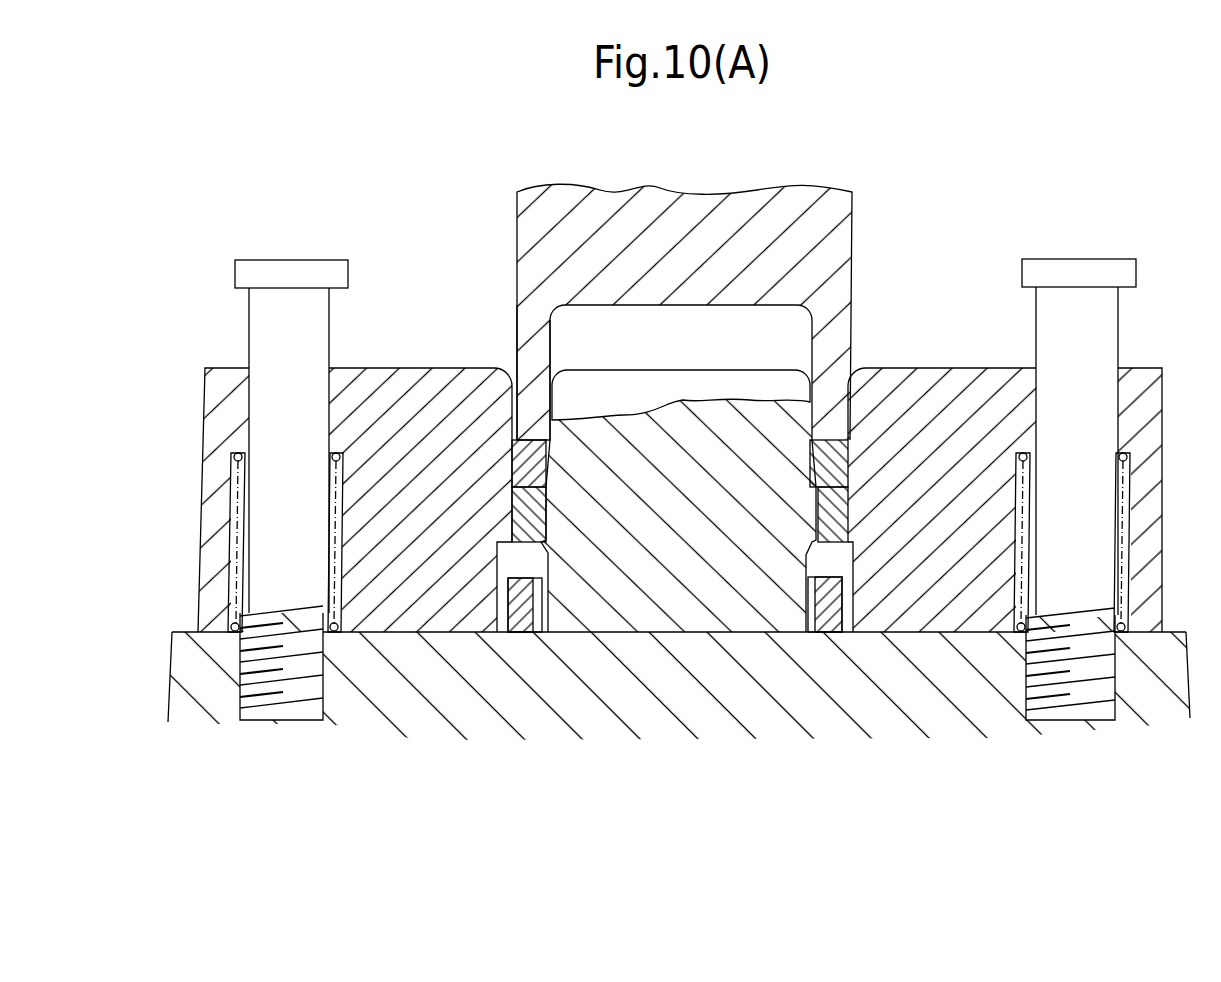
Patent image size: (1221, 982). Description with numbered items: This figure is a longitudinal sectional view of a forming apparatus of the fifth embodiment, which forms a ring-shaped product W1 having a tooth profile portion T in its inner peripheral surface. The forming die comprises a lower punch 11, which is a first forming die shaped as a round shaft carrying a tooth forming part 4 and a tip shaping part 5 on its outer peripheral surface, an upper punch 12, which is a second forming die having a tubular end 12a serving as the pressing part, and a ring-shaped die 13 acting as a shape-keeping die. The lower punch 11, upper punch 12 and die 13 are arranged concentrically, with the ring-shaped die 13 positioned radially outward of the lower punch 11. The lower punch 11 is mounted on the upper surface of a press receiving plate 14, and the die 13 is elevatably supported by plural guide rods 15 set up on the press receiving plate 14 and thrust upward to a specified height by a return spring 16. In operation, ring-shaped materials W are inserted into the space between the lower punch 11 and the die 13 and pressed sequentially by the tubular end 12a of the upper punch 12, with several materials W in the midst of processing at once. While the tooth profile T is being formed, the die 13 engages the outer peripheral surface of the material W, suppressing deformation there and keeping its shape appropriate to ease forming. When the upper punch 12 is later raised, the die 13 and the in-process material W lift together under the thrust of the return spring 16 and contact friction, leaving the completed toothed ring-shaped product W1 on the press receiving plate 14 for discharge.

The tooth forming part 4 is at (510, 508).
The tip shaping part 5 is at (545, 500).
The lower punch 11 is at (653, 390).
The upper punch 12 is at (713, 215).
The tubular end 12a is at (523, 355).
The ring-shaped die 13 is at (435, 407).
The press receiving plate 14 is at (187, 675).
The guide rod 15 is at (267, 340).
The return spring 16 is at (233, 502).
The tooth profile portion T is at (812, 620).
The ring-shaped material W is at (848, 500).
The ring-shaped product W1 is at (830, 620).